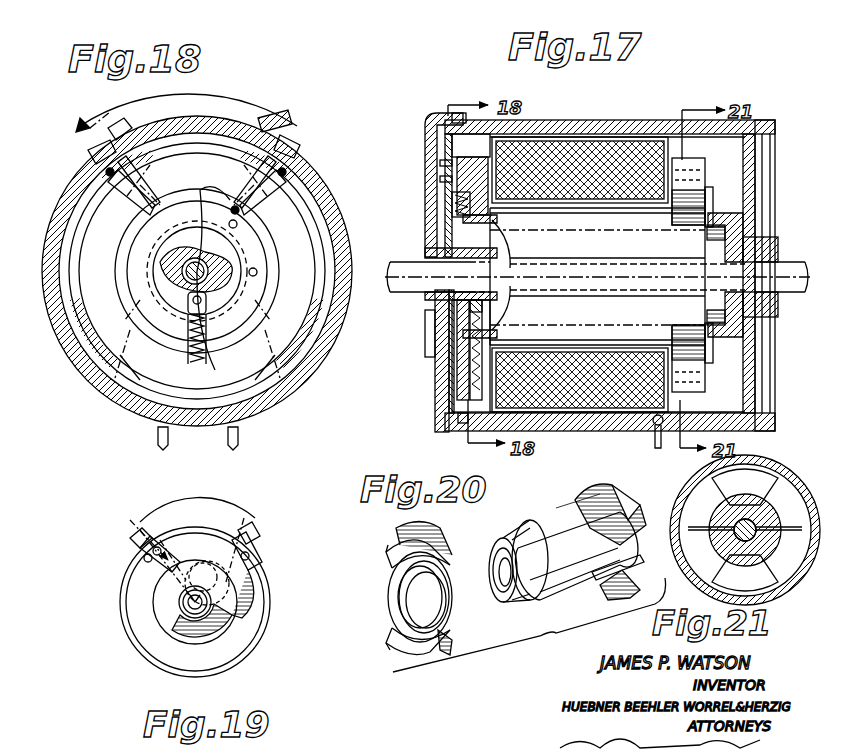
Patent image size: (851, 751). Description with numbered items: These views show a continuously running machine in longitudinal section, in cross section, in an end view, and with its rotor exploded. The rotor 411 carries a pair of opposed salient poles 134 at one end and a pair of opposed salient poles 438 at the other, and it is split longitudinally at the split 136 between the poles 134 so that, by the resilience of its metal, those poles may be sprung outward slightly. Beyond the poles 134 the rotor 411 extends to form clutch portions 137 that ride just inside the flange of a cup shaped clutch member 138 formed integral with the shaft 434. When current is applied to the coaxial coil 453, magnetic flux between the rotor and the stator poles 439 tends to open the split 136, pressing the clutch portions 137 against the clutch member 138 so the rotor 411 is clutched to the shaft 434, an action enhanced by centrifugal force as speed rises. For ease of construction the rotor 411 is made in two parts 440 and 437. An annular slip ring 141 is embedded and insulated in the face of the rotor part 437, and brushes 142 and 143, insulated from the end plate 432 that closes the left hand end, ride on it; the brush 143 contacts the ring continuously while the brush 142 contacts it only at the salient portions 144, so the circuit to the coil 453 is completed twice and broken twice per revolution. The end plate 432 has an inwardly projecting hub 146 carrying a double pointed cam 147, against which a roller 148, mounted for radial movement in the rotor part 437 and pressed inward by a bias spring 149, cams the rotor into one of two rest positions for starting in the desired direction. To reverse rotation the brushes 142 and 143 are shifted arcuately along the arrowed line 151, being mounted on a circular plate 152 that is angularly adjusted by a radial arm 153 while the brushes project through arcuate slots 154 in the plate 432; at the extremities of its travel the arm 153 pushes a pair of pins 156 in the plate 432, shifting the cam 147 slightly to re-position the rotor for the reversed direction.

In FIG. 17, the salient poles 134 is at (700, 168).
In FIG. 20, the salient poles 134 is at (601, 493).
In FIG. 21, the salient poles 134 is at (770, 478).
In FIG. 17, the split 136 is at (570, 268).
In FIG. 20, the split 136 is at (596, 552).
In FIG. 21, the split 136 is at (738, 557).
In FIG. 17, the clutch portions 137 is at (722, 243).
In FIG. 20, the clutch portions 137 is at (632, 523).
In FIG. 17, the cup shaped clutch member 138 is at (712, 198).
In FIG. 18, the annular slip ring 141 is at (256, 298).
In FIG. 17, the annular slip ring 141 is at (457, 214).
In FIG. 20, the annular slip ring 141 is at (424, 563).
In FIG. 18, the brush 142 is at (250, 210).
In FIG. 17, the brush 142 is at (453, 199).
In FIG. 18, the brush 143 is at (256, 270).
In FIG. 18, the salient portions 144 is at (286, 160).
In FIG. 20, the salient portions 144 is at (396, 572).
In FIG. 17, the hub 146 is at (497, 228).
In FIG. 18, the double pointed cam 147 is at (234, 172).
In FIG. 18, the roller 148 is at (190, 302).
In FIG. 17, the roller 148 is at (484, 304).
In FIG. 18, the bias spring 149 is at (150, 402).
In FIG. 17, the bias spring 149 is at (470, 392).
In FIG. 18, the arrowed line 151 is at (229, 97).
In FIG. 19, the arrowed line 151 is at (203, 504).
In FIG. 17, the circular plate 152 is at (428, 340).
In FIG. 19, the circular plate 152 is at (232, 593).
In FIG. 18, the radial arm 153 is at (302, 148).
In FIG. 17, the radial arm 153 is at (442, 118).
In FIG. 19, the radial arm 153 is at (240, 531).
In FIG. 19, the arcuate slots 154 is at (234, 641).
In FIG. 17, the pins 156 is at (448, 172).
In FIG. 19, the pins 156 is at (168, 512).
In FIG. 18, the rotor 411 is at (74, 326).
In FIG. 17, the rotor 411 is at (610, 200).
In FIG. 20, the rotor 411 is at (556, 506).
In FIG. 21, the rotor 411 is at (762, 492).
In FIG. 17, the end plate 432 is at (463, 378).
In FIG. 19, the end plate 432 is at (142, 623).
In FIG. 18, the shaft 434 is at (180, 266).
In FIG. 17, the shaft 434 is at (410, 282).
In FIG. 17, the rotor part 437 is at (461, 420).
In FIG. 20, the rotor part 437 is at (456, 632).
In FIG. 20, the salient poles 438 is at (402, 548).
In FIG. 18, the stator poles 439 is at (82, 372).
In FIG. 17, the stator poles 439 is at (759, 275).
In FIG. 20, the rotor part 440 is at (544, 513).
In FIG. 17, the coaxial coil 453 is at (572, 148).